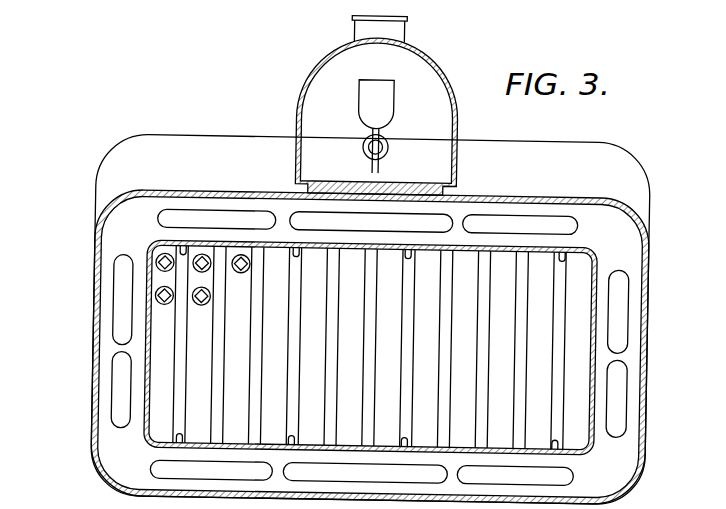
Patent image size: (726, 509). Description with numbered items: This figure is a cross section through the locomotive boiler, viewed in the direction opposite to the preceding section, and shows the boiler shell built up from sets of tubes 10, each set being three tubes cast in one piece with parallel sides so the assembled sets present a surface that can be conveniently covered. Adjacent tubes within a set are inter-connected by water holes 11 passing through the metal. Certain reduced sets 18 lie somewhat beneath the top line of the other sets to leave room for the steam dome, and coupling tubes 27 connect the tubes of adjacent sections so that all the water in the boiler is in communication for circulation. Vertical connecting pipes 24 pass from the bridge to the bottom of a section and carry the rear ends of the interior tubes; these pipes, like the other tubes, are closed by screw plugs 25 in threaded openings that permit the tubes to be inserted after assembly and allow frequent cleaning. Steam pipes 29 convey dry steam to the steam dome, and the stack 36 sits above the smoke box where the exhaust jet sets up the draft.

The sets of tubes 10 is at (168, 148).
The water holes 11 is at (173, 218).
The reduced sets 18 is at (200, 205).
The vertical connecting pipes 24 is at (422, 372).
The screw plugs 25 is at (158, 278).
The coupling tubes 27 is at (290, 437).
The steam pipes 29 is at (389, 148).
The stack 36 is at (406, 23).